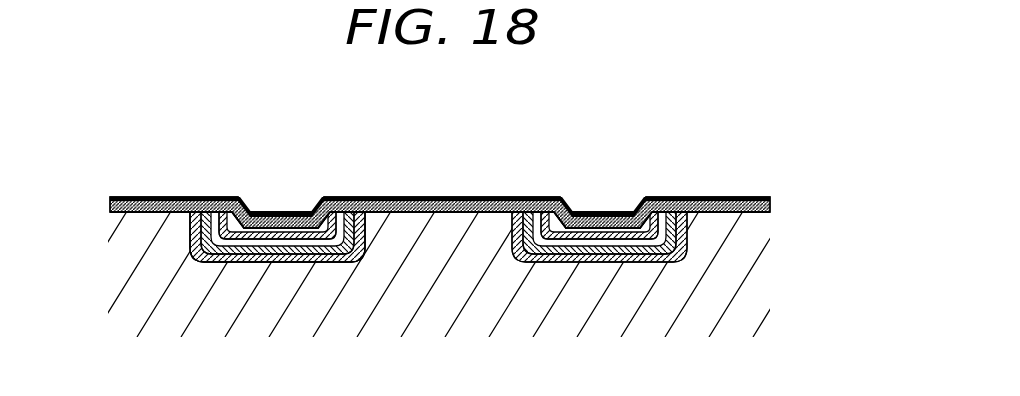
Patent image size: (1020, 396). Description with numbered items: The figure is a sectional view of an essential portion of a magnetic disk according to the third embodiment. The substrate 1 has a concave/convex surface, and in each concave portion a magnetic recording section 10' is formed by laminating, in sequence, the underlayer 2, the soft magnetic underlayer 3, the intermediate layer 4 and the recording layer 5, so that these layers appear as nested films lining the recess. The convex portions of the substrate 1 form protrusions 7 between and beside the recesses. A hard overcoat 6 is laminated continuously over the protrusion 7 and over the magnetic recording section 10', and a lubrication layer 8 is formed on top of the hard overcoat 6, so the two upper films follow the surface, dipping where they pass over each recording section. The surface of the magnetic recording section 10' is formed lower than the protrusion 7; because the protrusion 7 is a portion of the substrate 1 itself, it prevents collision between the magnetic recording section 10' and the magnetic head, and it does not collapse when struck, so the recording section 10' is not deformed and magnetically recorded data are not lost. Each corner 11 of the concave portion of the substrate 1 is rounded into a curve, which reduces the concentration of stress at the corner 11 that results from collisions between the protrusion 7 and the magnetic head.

The substrate 1 is at (766, 328).
The underlayer 2 is at (673, 250).
The soft magnetic underlayer 3 is at (673, 230).
The intermediate layer 4 is at (662, 222).
The recording layer 5 is at (648, 212).
The hard overcoat 6 is at (772, 208).
The protrusion 7 is at (463, 210).
The lubrication layer 8 is at (772, 200).
The magnetic recording section 10' is at (442, 167).
The corner 11 is at (198, 252).